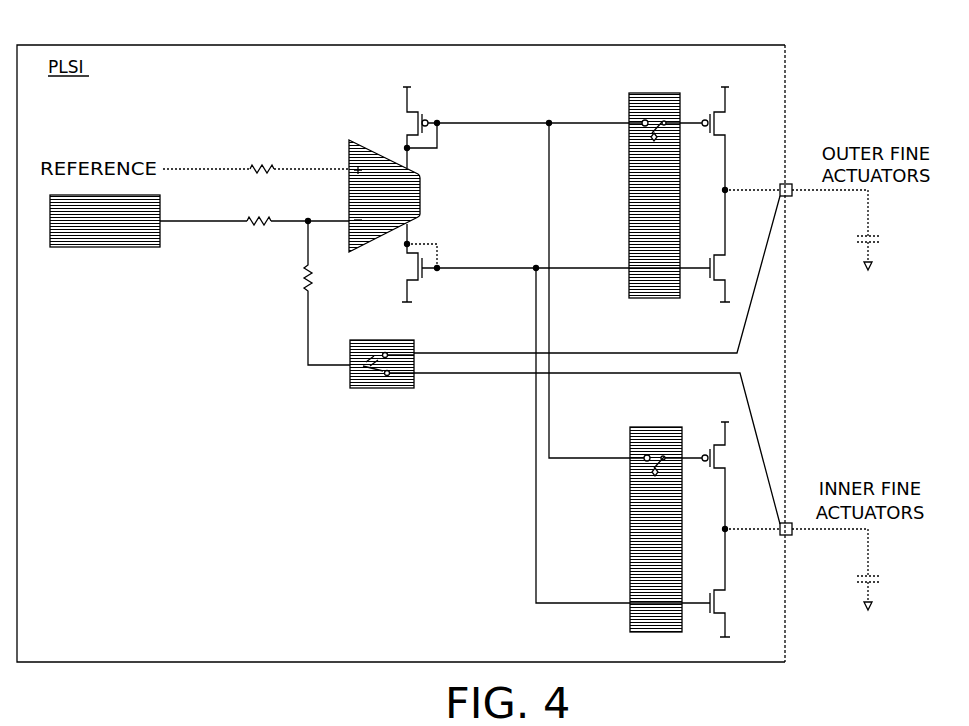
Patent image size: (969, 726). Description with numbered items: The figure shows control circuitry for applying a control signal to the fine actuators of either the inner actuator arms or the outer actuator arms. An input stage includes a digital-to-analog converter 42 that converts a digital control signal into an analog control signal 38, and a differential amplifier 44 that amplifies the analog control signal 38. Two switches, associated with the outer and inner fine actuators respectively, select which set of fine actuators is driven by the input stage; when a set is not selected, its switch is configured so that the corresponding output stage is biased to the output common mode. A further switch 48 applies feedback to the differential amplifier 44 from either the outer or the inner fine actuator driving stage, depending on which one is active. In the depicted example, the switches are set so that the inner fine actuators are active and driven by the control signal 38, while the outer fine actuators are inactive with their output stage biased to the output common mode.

The analog control signal 38 is at (197, 222).
The digital-to-analog converter 42 is at (103, 247).
The differential amplifier 44 is at (352, 140).
The switch 48 is at (383, 389).